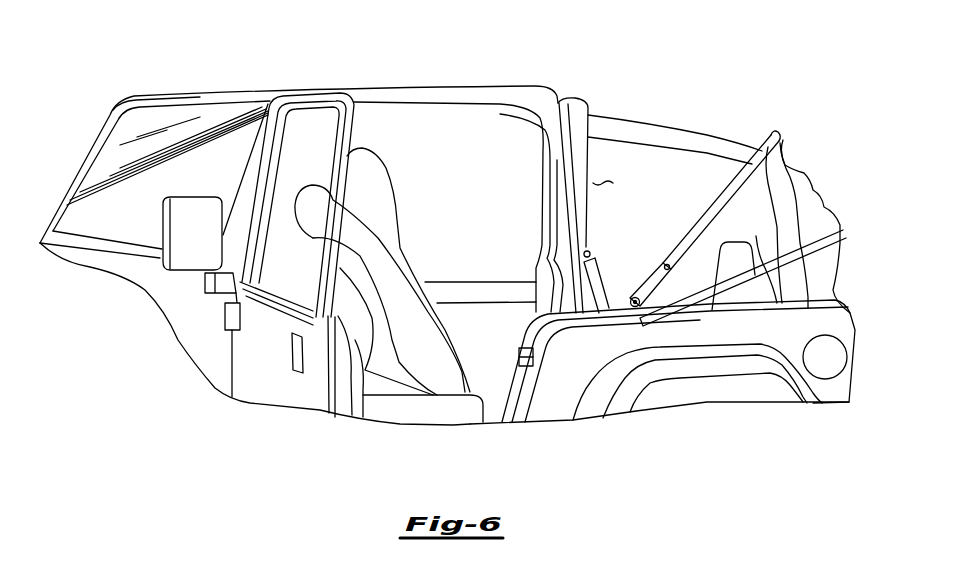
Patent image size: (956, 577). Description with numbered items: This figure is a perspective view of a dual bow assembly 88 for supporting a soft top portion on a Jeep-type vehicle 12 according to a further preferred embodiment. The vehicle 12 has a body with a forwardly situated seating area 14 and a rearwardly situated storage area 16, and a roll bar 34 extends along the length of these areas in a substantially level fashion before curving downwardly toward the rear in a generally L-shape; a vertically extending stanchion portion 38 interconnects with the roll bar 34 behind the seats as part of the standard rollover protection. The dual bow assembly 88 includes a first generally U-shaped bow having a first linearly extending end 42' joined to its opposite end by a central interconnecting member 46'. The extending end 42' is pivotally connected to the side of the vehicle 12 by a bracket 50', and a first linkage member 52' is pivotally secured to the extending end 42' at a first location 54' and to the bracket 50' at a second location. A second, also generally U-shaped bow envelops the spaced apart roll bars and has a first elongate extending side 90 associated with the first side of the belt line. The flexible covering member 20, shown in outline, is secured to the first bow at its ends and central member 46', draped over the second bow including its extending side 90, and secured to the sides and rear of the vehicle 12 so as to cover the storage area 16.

The Jeep-type vehicle 12 is at (165, 96).
The seating area 14 is at (440, 208).
The storage area 16 is at (603, 172).
The flexible covering member 20 is at (800, 170).
The roll bar 34 is at (655, 128).
The stanchion portion 38 is at (578, 104).
The first linearly extending end 42' is at (721, 200).
The central interconnecting member 46' is at (787, 174).
The bracket 50' is at (604, 331).
The first linkage member 52' is at (613, 279).
The first location 54' is at (651, 259).
The dual bow assembly 88 is at (425, 70).
The first elongate extending side 90 is at (756, 236).